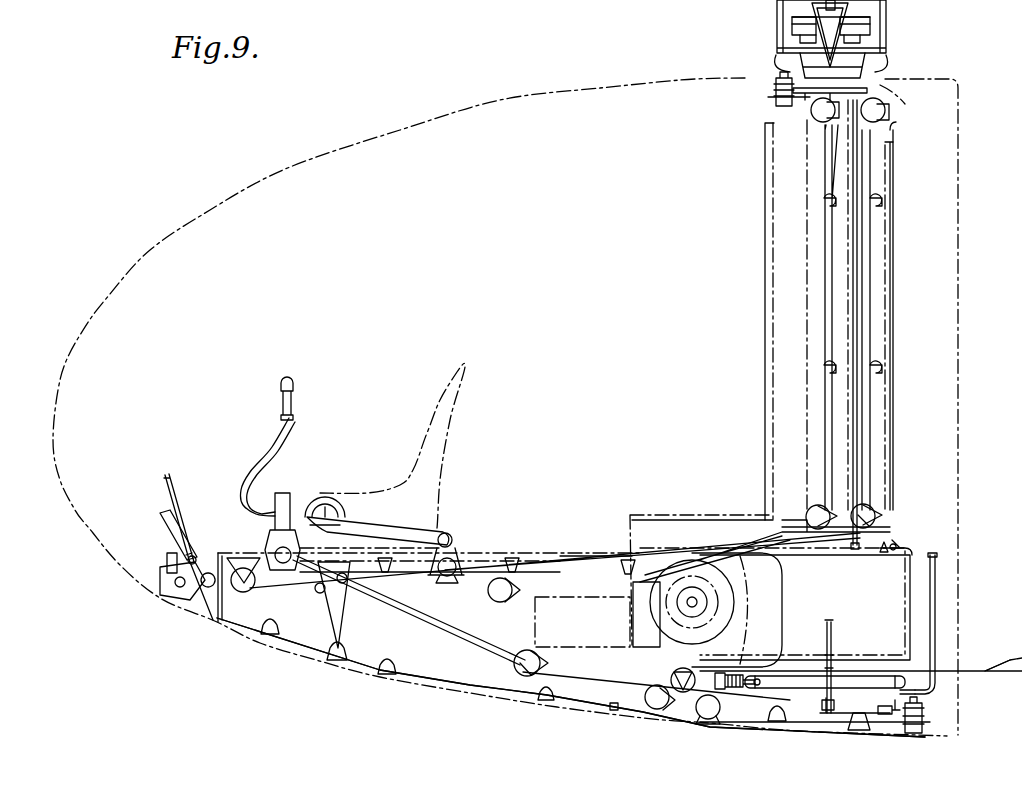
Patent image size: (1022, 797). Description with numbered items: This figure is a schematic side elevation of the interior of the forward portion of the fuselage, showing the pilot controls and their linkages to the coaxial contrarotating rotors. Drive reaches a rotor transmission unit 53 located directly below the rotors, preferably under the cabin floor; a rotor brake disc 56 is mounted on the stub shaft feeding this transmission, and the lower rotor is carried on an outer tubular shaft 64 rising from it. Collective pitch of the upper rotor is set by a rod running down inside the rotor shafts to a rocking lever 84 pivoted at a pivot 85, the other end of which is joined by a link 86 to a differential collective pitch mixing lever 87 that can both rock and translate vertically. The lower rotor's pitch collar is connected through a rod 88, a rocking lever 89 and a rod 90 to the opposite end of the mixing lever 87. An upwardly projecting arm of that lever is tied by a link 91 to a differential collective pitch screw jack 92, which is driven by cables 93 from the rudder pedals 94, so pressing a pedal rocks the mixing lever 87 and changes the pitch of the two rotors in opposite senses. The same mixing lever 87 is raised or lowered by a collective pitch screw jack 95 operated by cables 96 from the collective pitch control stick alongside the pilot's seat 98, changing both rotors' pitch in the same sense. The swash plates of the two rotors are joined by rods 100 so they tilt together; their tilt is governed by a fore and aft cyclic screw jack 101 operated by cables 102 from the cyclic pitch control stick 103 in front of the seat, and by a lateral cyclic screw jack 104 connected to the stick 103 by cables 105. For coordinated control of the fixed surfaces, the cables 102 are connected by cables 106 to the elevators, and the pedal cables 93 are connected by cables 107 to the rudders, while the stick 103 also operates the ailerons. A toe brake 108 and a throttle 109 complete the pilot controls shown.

The rotor transmission unit 53 is at (912, 593).
The rotor brake disc 56 is at (657, 572).
The outer tubular shaft 64 is at (807, 310).
The rocking lever 84 is at (838, 712).
The pivot 85 is at (860, 712).
The link 86 is at (890, 708).
The differential collective pitch mixing lever 87 is at (832, 640).
The rod 88 is at (858, 430).
The rocking lever 89 is at (907, 546).
The rod 90 is at (936, 614).
The link 91 is at (800, 689).
The differential collective pitch screw jack 92 is at (740, 690).
The cables 93 is at (478, 688).
The rudder pedals 94 is at (186, 538).
The collective pitch screw jack 95 is at (924, 713).
The cables 96 is at (420, 610).
The pilot's seat 98 is at (455, 452).
The rods 100 is at (777, 20).
The fore and aft cyclic screw jack 101 is at (774, 92).
The cables 102 is at (825, 345).
The cyclic pitch control stick 103 is at (272, 425).
The lateral cyclic screw jack 104 is at (875, 90).
The cables 105 is at (893, 142).
The cables 106 is at (330, 600).
The cables 107 is at (1003, 679).
The toe brake 108 is at (163, 483).
The throttle 109 is at (345, 523).